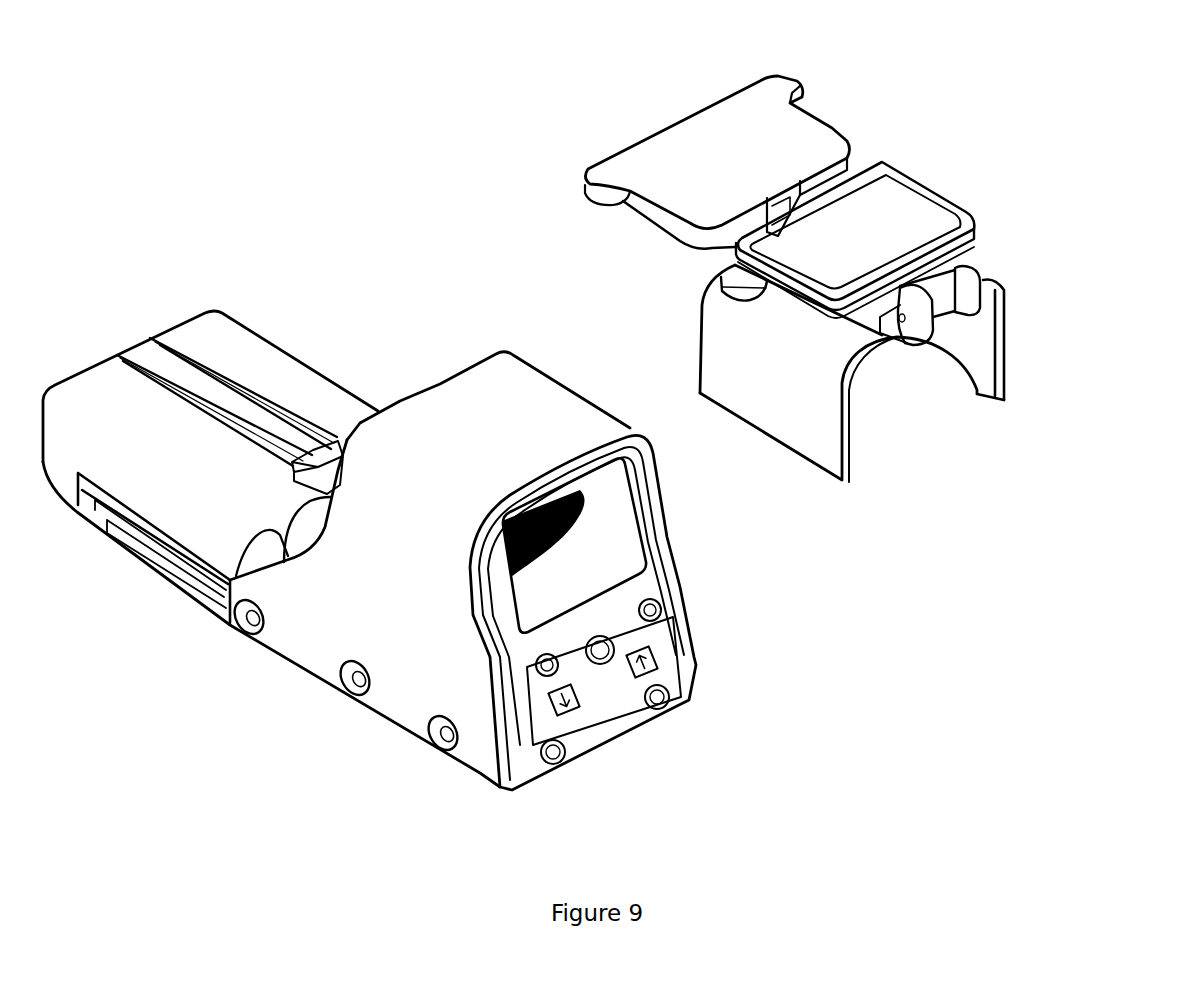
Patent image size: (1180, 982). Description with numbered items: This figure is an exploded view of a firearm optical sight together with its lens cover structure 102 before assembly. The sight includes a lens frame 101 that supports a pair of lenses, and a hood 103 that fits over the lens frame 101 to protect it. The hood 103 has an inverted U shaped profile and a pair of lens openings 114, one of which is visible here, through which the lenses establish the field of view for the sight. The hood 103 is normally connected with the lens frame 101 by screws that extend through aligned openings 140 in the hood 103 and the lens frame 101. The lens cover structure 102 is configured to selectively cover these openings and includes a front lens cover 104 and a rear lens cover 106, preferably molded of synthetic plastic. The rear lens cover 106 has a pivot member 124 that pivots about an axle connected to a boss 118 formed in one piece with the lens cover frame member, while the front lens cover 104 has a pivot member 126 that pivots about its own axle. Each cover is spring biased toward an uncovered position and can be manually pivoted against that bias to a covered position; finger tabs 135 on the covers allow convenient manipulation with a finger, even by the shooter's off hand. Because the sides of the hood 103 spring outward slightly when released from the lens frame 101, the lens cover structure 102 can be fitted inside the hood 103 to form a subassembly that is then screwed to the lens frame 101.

The lens frame 101 is at (640, 587).
The lens cover structure 102 is at (1006, 320).
The hood 103 is at (240, 560).
The front lens cover 104 is at (832, 121).
The rear lens cover 106 is at (943, 187).
The lens openings 114 is at (582, 553).
The boss 118 is at (982, 273).
The pivot member 124 is at (937, 282).
The pivot member 126 is at (788, 210).
The finger tabs 135 is at (803, 72).
The aligned openings 140 is at (241, 630).